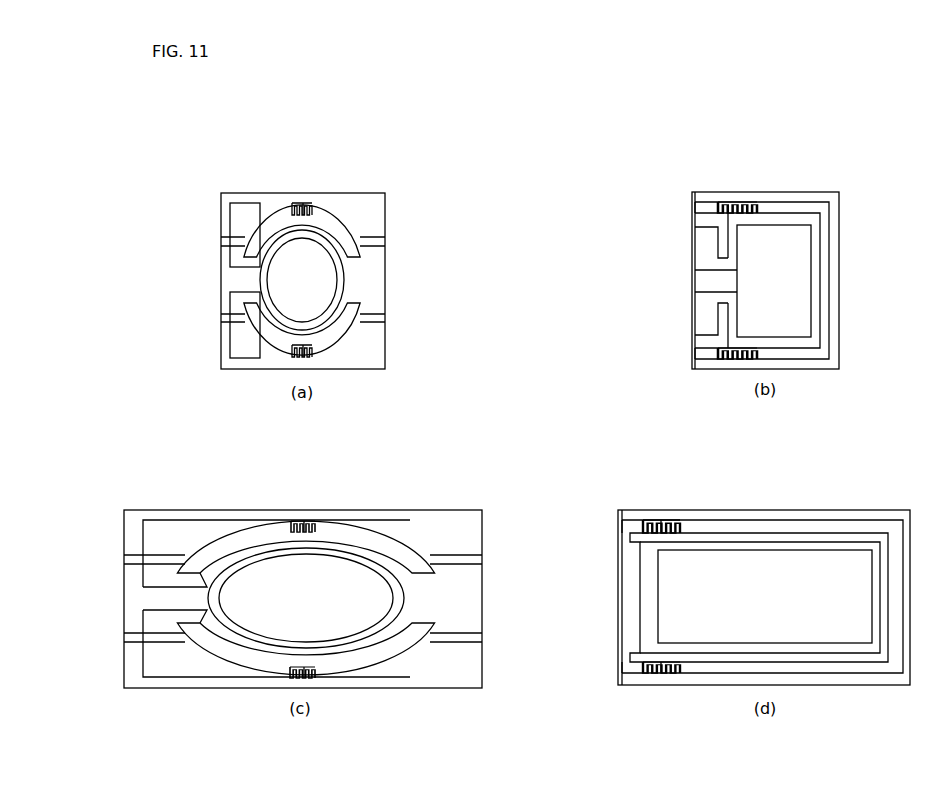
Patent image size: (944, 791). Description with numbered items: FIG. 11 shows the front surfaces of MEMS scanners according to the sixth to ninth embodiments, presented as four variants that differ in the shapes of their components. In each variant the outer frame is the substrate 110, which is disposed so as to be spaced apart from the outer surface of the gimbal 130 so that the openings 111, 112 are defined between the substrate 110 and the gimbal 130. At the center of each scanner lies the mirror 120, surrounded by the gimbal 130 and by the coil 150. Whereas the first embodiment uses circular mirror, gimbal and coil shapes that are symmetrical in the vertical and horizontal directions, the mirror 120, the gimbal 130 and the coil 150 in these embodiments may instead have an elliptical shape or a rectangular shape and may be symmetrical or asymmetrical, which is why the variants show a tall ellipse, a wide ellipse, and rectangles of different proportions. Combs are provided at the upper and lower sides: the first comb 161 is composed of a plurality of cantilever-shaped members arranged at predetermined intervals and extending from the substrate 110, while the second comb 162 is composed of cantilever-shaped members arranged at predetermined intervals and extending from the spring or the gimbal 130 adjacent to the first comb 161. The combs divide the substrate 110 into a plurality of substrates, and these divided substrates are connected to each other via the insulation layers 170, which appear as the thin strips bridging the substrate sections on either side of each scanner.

The substrate 110 is at (368, 212).
The opening 111 is at (277, 222).
The opening 112 is at (338, 340).
The mirror 120 is at (283, 300).
The gimbal 130 is at (292, 320).
The coil 150 is at (238, 217).
The first comb 161 is at (296, 203).
The second comb 162 is at (310, 203).
The insulation layer 170 is at (222, 316).